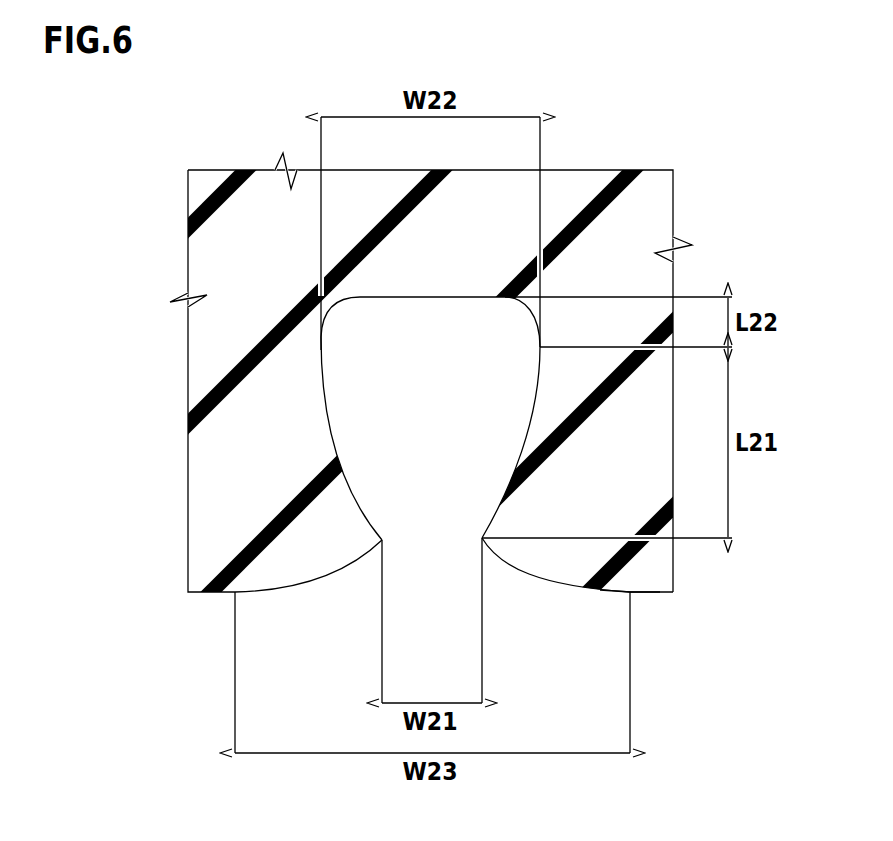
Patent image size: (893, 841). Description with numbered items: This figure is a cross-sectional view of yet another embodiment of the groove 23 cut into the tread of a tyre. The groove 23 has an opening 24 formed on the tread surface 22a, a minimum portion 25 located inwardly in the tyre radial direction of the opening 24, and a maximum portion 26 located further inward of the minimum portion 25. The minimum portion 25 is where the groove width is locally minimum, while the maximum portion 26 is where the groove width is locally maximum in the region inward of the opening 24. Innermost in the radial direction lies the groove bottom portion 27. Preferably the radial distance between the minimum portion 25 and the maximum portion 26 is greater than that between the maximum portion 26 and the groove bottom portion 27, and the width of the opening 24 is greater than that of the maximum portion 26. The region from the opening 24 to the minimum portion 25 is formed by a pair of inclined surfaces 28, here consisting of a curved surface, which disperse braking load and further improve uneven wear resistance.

The tread surface 22a is at (657, 593).
The groove 23 is at (362, 601).
The opening 24 is at (625, 593).
The minimum portion 25 is at (481, 539).
The maximum portion 26 is at (540, 348).
The groove bottom portion 27 is at (430, 300).
The inclined surfaces 28 is at (542, 584).